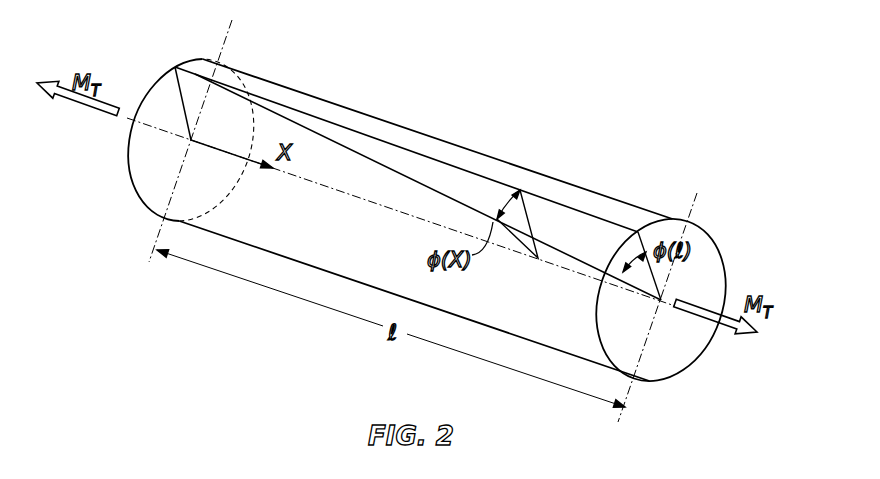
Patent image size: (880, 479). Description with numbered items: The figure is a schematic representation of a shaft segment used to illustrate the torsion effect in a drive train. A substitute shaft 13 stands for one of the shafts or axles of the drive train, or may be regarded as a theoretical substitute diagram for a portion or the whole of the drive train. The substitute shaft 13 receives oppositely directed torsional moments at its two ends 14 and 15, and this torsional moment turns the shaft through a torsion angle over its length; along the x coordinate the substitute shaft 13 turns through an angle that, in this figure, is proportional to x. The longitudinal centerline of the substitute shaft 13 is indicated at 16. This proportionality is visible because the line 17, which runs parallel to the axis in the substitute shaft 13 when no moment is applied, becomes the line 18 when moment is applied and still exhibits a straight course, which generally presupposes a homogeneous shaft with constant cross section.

The substitute shaft 13 is at (323, 96).
The end 14 is at (182, 58).
The end 15 is at (660, 383).
The longitudinal axis 16 is at (350, 193).
The line parallel to the axis 17 is at (360, 132).
The line 18 is at (547, 240).